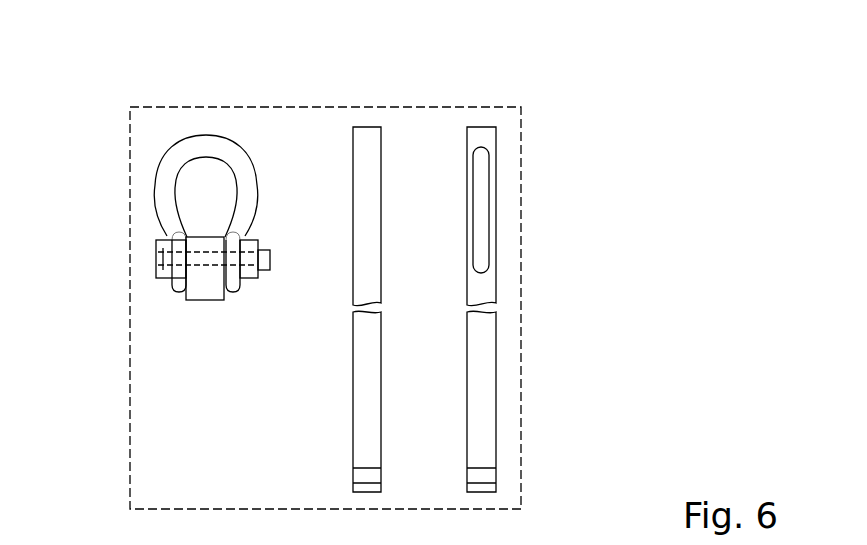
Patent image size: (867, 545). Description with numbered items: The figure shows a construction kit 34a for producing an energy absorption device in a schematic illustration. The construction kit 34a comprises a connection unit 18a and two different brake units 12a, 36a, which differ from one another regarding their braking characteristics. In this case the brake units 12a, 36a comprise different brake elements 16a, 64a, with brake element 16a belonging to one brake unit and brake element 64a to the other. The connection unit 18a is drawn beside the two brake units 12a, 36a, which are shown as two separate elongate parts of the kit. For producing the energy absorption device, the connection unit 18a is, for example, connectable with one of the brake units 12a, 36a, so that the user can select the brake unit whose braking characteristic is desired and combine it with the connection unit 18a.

The brake unit 12a is at (504, 170).
The connection unit 18a is at (177, 303).
The brake unit 36a is at (362, 126).
The construction kit 34a is at (484, 126).
The brake element 64a is at (368, 433).
The brake element 16a is at (482, 397).